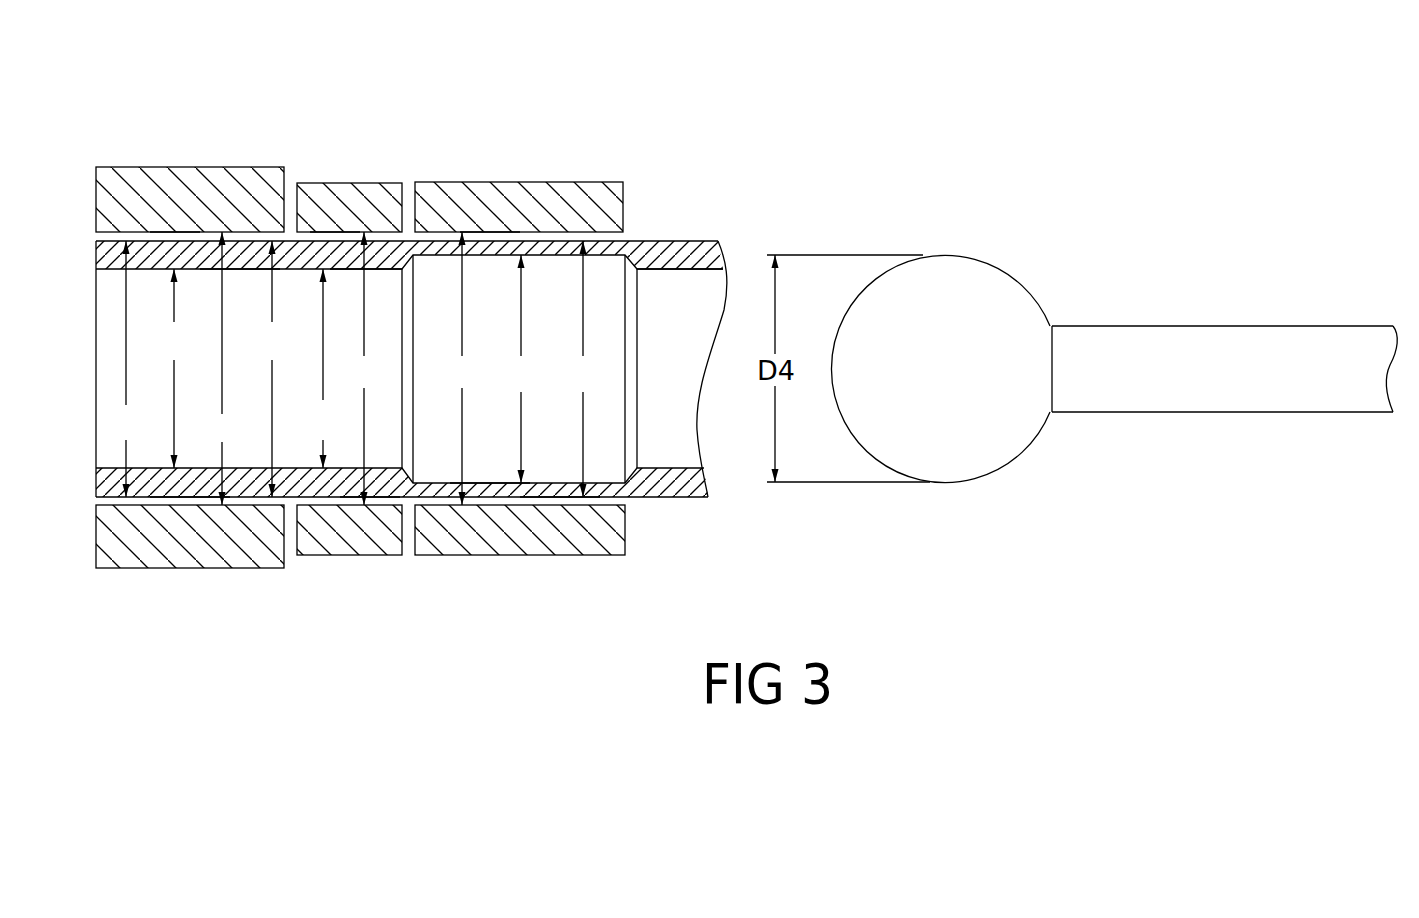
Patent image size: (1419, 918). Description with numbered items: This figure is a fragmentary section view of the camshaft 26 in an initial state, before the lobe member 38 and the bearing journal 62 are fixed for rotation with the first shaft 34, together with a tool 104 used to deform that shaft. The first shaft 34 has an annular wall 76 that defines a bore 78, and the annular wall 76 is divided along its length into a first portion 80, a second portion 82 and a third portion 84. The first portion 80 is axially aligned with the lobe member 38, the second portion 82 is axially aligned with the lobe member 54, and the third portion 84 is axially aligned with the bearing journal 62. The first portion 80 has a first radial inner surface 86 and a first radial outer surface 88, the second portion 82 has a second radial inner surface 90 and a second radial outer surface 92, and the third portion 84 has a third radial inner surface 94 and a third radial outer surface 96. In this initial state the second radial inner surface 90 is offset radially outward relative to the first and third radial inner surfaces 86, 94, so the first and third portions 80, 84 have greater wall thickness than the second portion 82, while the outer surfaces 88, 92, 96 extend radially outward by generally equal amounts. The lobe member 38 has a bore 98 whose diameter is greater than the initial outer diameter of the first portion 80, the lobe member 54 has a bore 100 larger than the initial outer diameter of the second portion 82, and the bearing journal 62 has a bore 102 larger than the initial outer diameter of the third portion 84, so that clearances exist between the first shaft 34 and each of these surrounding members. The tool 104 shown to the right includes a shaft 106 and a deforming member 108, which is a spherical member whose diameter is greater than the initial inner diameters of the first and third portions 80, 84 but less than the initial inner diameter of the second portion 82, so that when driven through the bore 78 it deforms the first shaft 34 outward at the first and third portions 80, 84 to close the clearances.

The camshaft 26 is at (767, 147).
The first shaft 34 is at (720, 242).
The lobe member 38 is at (347, 183).
The lobe member 54 is at (500, 182).
The bearing journal 62 is at (181, 167).
The annular wall 76 is at (672, 497).
The bore 78 is at (662, 270).
The first portion 80 is at (335, 487).
The second portion 82 is at (500, 492).
The third portion 84 is at (142, 487).
The first radial inner surface 86 is at (374, 270).
The first radial outer surface 88 is at (372, 497).
The second radial inner surface 90 is at (488, 482).
The second radial outer surface 92 is at (560, 497).
The third radial inner surface 94 is at (238, 270).
The third radial outer surface 96 is at (188, 497).
The bore 98 is at (336, 235).
The bore 100 is at (492, 235).
The bore 102 is at (178, 235).
The tool 104 is at (1227, 252).
The shaft 106 is at (1255, 326).
The deforming member 108 is at (963, 255).